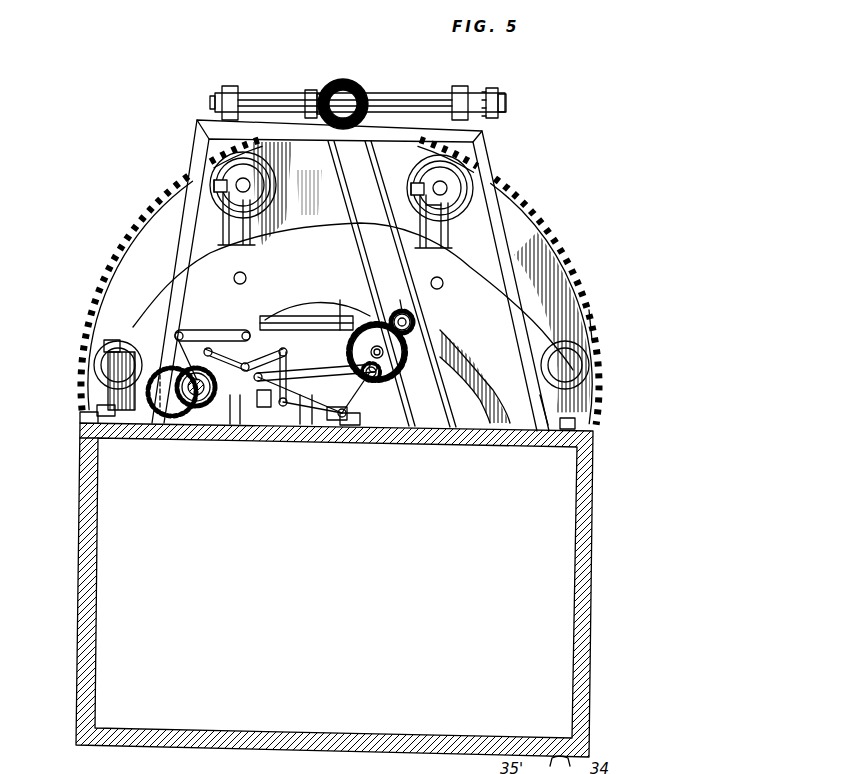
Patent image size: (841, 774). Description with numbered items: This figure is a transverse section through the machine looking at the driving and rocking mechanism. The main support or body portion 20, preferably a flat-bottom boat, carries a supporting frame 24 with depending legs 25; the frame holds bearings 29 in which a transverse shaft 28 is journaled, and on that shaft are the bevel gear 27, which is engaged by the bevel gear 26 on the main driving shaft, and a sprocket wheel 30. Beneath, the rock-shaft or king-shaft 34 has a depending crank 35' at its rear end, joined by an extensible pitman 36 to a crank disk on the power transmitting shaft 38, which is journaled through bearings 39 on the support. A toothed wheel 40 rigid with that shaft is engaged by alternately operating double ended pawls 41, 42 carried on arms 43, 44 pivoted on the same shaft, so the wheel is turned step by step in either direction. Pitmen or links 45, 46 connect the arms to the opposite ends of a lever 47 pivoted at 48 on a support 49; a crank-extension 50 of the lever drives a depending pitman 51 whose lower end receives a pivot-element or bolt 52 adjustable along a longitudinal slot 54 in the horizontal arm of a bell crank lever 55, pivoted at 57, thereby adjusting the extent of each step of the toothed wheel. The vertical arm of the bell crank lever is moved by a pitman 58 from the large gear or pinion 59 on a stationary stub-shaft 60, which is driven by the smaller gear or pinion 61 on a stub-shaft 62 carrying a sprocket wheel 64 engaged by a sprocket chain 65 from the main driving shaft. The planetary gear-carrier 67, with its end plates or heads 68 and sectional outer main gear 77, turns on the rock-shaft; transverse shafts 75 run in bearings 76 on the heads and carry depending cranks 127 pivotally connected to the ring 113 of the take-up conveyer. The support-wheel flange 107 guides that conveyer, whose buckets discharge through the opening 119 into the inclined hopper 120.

The main support or body portion 20 is at (594, 598).
The supporting frame 24 is at (393, 133).
The depending legs 25 is at (487, 157).
The bevel gear 26 is at (350, 80).
The bevel gear 27 is at (311, 90).
The transverse shaft 28 is at (377, 103).
The bearings 29 is at (233, 88).
The sprocket wheel 30 is at (506, 100).
The rock-shaft or king-shaft 34 is at (339, 306).
The crank 35' is at (381, 421).
The pitman 36 is at (300, 418).
The power transmitting shaft 38 is at (165, 440).
The bearings 39 is at (80, 437).
The toothed wheel 40 is at (175, 390).
The double ended pawl 41 is at (205, 345).
The double ended pawl 42 is at (128, 344).
The arm 43 is at (200, 444).
The arm 44 is at (185, 366).
The pitman or link 45 is at (235, 444).
The pitman or link 46 is at (225, 345).
The lever 47 is at (258, 335).
The pivot 48 is at (272, 340).
The support 49 is at (258, 440).
The crank-extension 50 is at (360, 305).
The depending pitman 51 is at (335, 416).
The pivot-element or bolt 52 is at (283, 406).
The longitudinal slot 54 is at (295, 442).
The bell crank lever 55 is at (285, 424).
The pivotal connection 57 is at (280, 440).
The pitman 58 is at (385, 382).
The large gear or pinion 59 is at (390, 372).
The stationary stub-shaft 60 is at (405, 352).
The smaller gear or pinion 61 is at (411, 326).
The stub-shaft 62 is at (413, 317).
The sprocket wheel 64 is at (403, 310).
The sprocket chain 65 is at (357, 240).
The planetary gear-carrier 67 is at (576, 240).
The end plates or heads 68 is at (552, 322).
The transverse shafts 75 is at (250, 186).
The bearings 76 is at (425, 170).
The outer main gear 77 is at (598, 330).
The outstanding flange 107 is at (578, 425).
The ring 113 is at (566, 396).
The opening 119 is at (446, 238).
The inclined hopper 120 is at (306, 327).
The depending cranks 127 is at (236, 223).